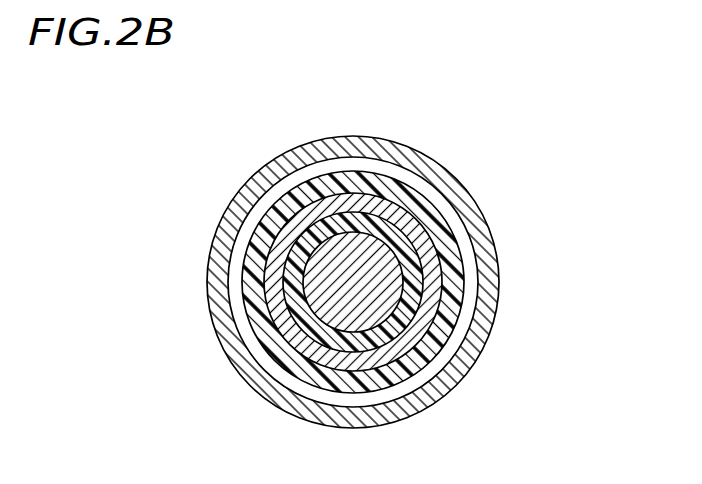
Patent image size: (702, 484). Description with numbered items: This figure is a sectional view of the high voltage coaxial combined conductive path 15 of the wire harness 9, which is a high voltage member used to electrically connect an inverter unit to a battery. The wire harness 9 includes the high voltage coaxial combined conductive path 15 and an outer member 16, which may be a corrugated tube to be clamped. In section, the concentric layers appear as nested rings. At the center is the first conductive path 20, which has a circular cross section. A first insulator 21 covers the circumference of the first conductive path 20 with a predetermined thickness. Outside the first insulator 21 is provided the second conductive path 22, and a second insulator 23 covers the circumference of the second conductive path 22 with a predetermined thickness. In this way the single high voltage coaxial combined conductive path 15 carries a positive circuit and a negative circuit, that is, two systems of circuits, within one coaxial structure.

The wire harness 9 is at (238, 154).
The high voltage coaxial combined conductive path 15 is at (246, 248).
The outer member 16 is at (430, 163).
The first conductive path 20 is at (415, 210).
The first insulator 21 is at (418, 246).
The second conductive path 22 is at (405, 265).
The second insulator 23 is at (390, 331).